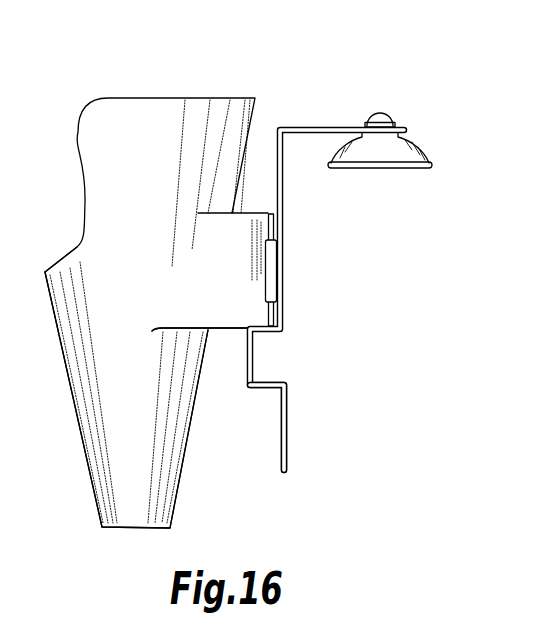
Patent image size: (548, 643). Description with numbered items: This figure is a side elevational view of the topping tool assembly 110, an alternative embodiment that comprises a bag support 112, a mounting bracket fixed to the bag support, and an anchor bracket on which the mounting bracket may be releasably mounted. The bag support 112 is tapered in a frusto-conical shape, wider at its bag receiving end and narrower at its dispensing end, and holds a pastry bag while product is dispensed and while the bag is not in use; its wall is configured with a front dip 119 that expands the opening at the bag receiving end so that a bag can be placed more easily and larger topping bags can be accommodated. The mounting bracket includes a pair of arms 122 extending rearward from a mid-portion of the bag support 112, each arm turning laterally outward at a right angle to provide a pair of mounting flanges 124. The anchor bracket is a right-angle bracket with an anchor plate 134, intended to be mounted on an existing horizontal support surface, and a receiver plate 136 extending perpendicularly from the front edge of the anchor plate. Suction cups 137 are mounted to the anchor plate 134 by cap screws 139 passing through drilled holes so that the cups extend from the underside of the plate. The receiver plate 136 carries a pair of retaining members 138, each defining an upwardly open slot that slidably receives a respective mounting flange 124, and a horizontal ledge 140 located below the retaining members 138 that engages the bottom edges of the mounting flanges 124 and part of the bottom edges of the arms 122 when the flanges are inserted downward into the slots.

The topping tool assembly 110 is at (143, 70).
The bag support 112 is at (155, 399).
The front dip 119 is at (75, 250).
The arms 122 is at (237, 275).
The mounting flanges 124 is at (284, 228).
The anchor plate 134 is at (305, 126).
The receiver plate 136 is at (288, 438).
The suction cups 137 is at (387, 155).
The retaining members 138 is at (284, 270).
The cap screws 139 is at (383, 107).
The horizontal ledge 140 is at (260, 325).